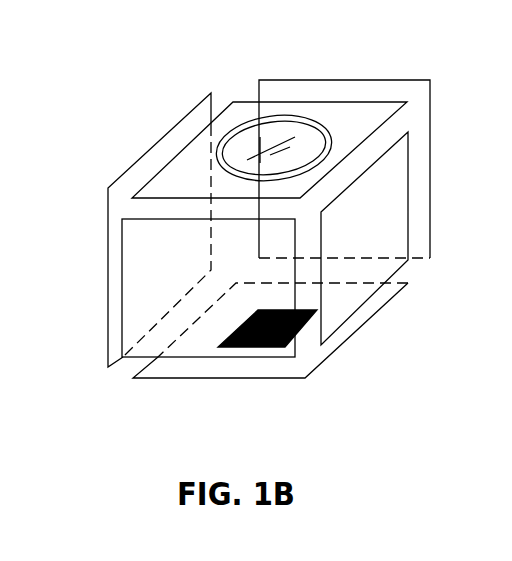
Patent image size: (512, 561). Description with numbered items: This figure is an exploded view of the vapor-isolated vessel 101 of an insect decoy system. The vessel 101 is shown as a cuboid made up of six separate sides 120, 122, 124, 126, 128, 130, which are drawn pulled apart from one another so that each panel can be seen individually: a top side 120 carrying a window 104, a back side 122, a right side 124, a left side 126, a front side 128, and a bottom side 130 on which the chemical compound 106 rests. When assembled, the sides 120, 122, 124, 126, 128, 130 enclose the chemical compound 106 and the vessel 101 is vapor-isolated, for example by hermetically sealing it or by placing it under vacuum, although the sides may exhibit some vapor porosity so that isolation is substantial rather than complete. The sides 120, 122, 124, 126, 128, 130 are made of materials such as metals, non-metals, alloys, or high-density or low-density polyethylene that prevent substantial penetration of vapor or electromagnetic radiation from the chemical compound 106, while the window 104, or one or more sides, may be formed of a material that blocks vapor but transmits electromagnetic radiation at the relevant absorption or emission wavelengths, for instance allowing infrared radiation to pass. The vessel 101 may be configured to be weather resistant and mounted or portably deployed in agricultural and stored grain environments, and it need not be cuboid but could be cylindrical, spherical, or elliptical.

The vapor-isolated vessel 101 is at (136, 73).
The window 104 is at (288, 128).
The chemical compound 106 is at (263, 347).
The side 120 is at (368, 112).
The side 122 is at (413, 119).
The side 124 is at (397, 213).
The side 126 is at (140, 168).
The side 128 is at (140, 260).
The side 130 is at (176, 368).